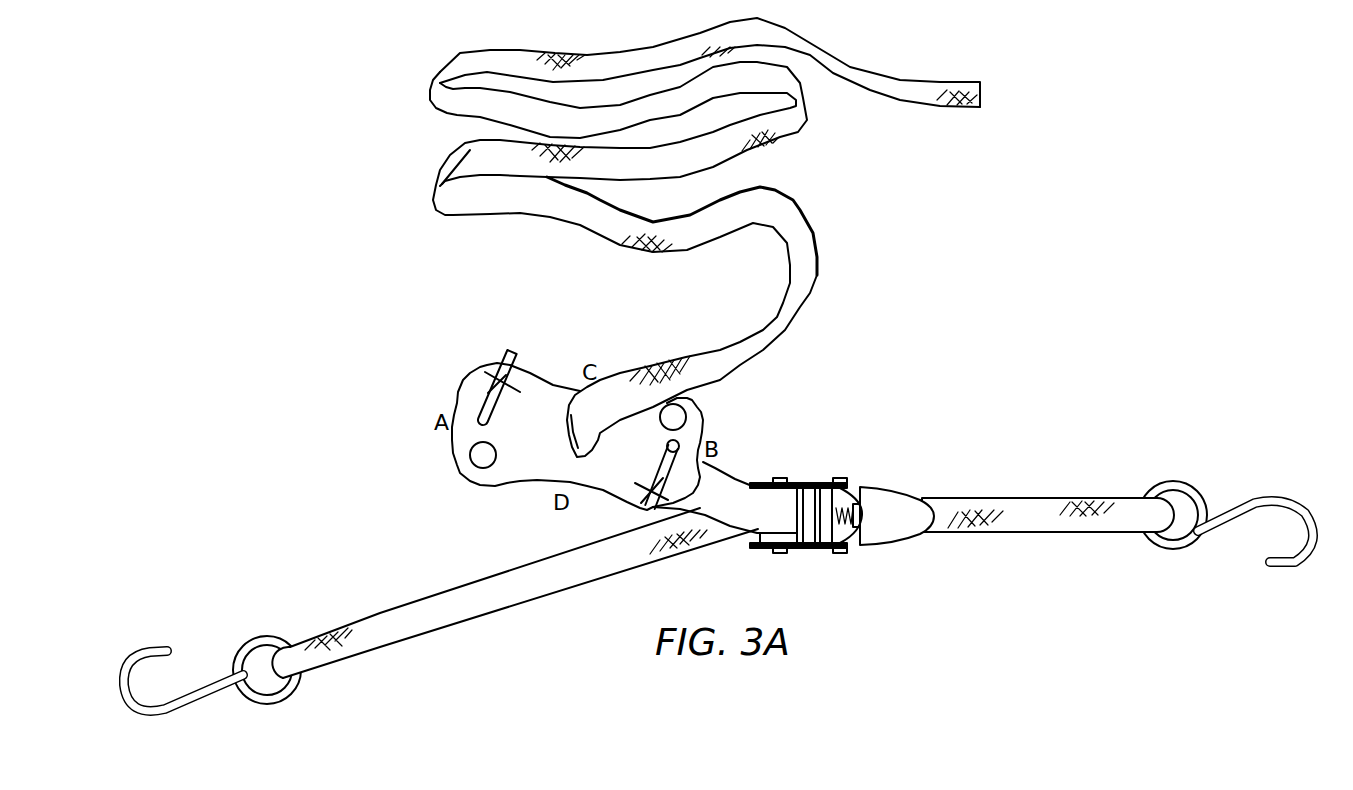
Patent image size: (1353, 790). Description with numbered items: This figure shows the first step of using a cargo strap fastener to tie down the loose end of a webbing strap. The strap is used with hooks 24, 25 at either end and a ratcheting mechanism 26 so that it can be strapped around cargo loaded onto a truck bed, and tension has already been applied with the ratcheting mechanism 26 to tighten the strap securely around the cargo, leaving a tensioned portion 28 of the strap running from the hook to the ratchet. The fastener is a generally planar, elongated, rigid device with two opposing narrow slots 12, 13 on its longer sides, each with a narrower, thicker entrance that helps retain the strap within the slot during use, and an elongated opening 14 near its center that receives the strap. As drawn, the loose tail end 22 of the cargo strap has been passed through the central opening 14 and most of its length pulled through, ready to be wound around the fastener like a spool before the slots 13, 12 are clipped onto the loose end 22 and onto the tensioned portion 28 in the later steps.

The slot 12 is at (511, 352).
The slot 13 is at (633, 517).
The elongated opening 14 is at (567, 417).
The loose tail end 22 is at (595, 228).
The hook 24 is at (138, 655).
The hook 25 is at (1267, 498).
The ratcheting mechanism 26 is at (852, 560).
The tensioned portion 28 is at (410, 640).